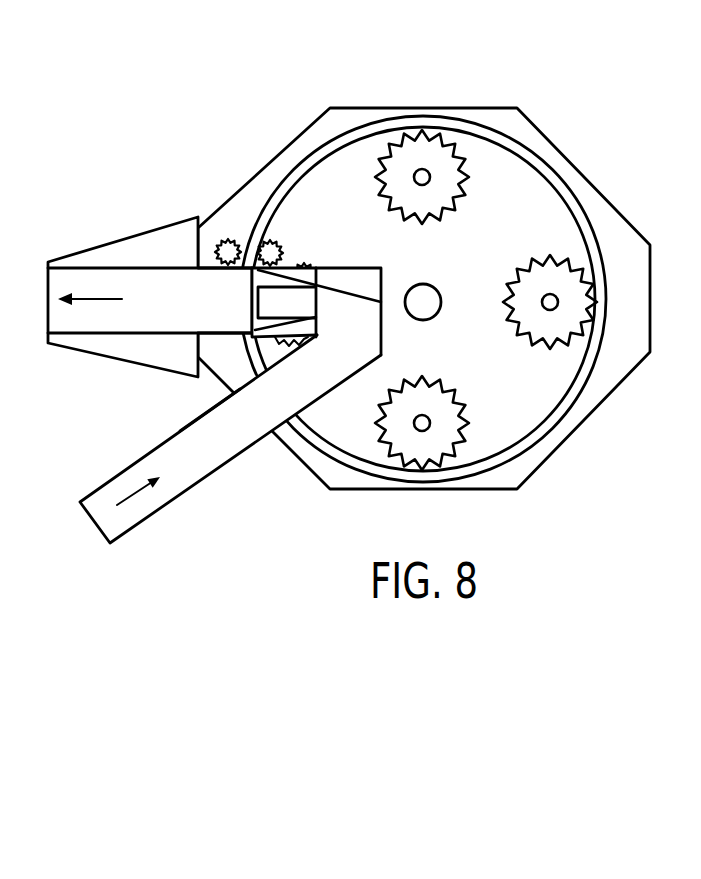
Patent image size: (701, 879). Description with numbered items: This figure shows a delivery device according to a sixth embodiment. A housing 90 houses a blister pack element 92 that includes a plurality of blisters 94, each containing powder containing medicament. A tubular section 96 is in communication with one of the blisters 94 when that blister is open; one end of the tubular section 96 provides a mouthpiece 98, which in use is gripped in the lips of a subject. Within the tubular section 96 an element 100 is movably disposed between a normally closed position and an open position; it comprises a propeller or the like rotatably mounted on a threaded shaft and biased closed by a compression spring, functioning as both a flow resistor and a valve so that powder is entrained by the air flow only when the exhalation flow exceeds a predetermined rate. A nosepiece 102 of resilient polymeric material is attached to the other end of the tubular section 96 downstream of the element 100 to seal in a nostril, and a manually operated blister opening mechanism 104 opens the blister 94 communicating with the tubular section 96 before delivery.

The housing 90 is at (292, 144).
The blister pack element 92 is at (548, 213).
The blisters 94 is at (398, 212).
The tubular section 96 is at (204, 415).
The mouthpiece 98 is at (118, 541).
The element 100 is at (256, 330).
The nosepiece 102 is at (122, 242).
The blister opening mechanism 104 is at (225, 243).